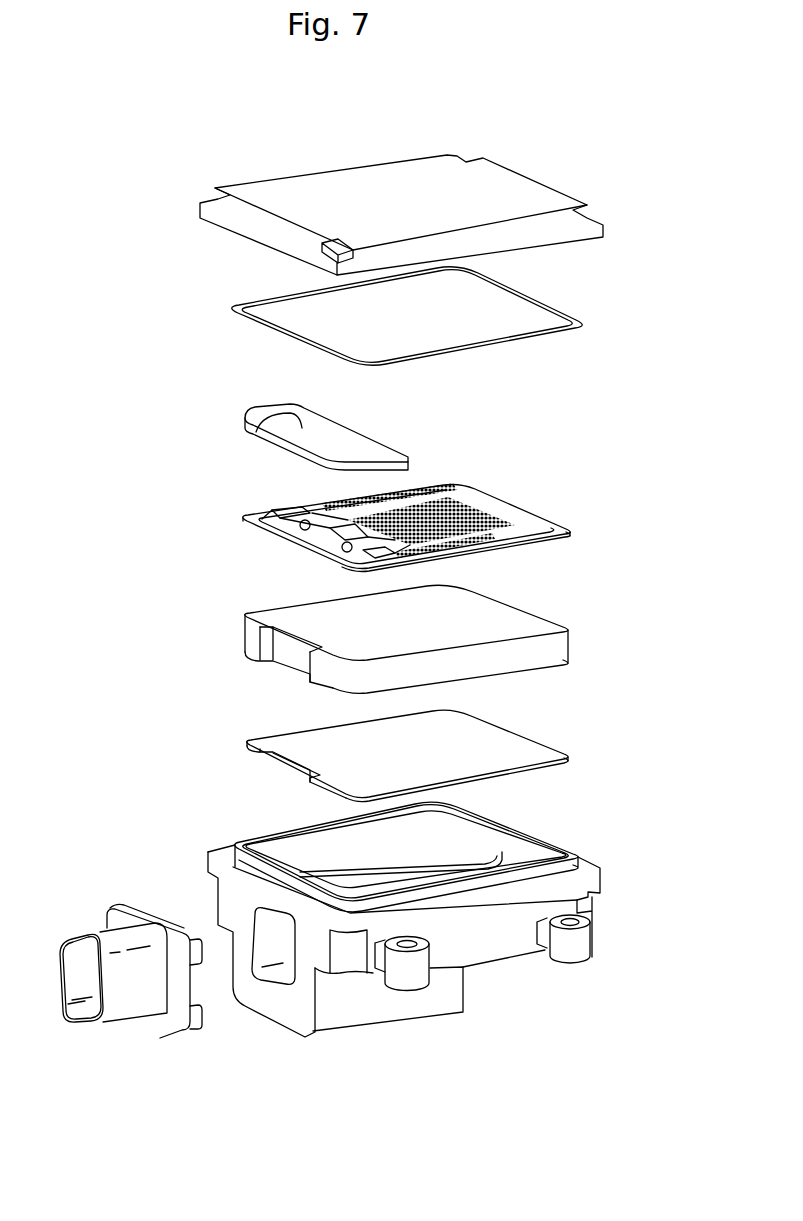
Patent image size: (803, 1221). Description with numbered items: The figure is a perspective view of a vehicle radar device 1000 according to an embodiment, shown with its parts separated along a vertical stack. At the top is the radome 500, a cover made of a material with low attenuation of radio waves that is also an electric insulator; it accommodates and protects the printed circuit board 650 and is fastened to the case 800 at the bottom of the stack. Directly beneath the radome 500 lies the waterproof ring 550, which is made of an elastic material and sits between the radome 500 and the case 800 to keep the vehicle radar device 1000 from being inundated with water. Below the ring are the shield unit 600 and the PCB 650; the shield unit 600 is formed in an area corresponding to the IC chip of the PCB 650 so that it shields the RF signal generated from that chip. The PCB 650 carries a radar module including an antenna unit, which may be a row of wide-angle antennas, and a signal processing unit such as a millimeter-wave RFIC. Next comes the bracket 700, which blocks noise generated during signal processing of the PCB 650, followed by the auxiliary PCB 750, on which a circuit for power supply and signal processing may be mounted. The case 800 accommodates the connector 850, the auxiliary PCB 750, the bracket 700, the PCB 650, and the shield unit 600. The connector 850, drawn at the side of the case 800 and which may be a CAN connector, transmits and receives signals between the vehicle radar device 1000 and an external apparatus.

The vehicle radar device 1000 is at (155, 114).
The radome 500 is at (548, 200).
The waterproof ring 550 is at (558, 322).
The shield unit 600 is at (253, 428).
The printed circuit board 650 is at (527, 515).
The bracket 700 is at (547, 628).
The auxiliary PCB 750 is at (540, 748).
The case 800 is at (585, 892).
The connector 850 is at (122, 1012).